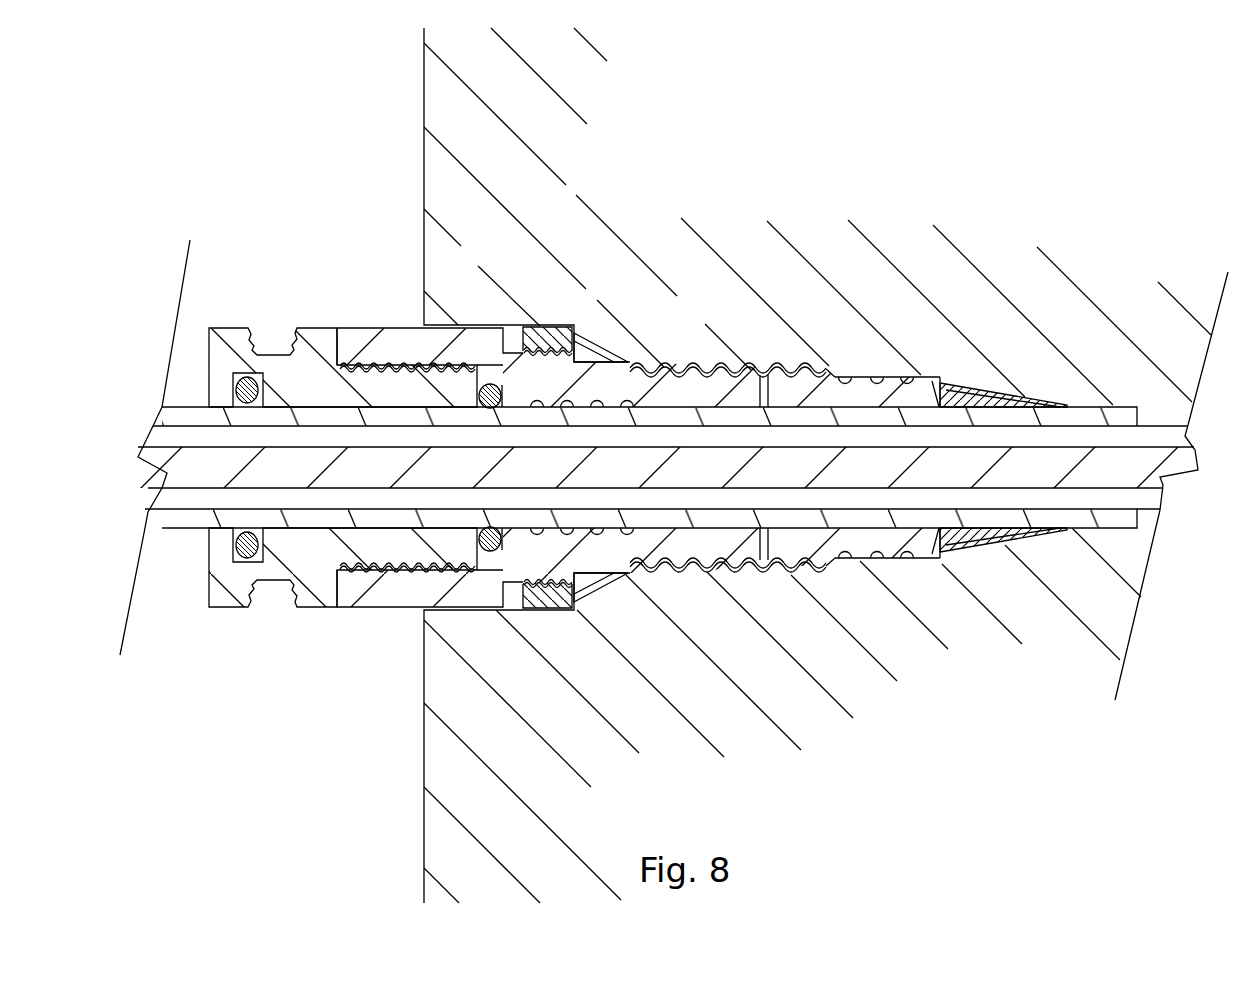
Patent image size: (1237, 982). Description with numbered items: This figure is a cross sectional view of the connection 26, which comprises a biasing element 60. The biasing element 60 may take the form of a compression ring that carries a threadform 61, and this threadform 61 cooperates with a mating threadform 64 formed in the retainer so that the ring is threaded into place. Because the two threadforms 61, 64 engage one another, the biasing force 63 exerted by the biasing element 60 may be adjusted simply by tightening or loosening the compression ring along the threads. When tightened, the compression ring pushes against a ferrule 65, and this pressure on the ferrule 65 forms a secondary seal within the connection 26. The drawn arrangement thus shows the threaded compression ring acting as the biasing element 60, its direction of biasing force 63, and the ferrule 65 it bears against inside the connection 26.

The connection 26 is at (797, 208).
The biasing element 60 is at (544, 305).
The threadform 61 is at (530, 335).
The biasing force 63 is at (558, 298).
The threadform 64 is at (530, 335).
The ferrule 65 is at (600, 357).